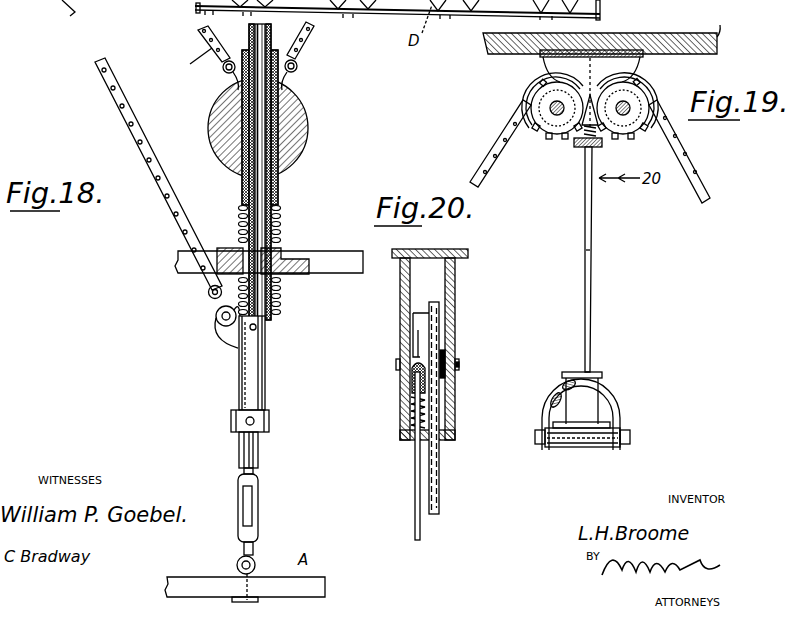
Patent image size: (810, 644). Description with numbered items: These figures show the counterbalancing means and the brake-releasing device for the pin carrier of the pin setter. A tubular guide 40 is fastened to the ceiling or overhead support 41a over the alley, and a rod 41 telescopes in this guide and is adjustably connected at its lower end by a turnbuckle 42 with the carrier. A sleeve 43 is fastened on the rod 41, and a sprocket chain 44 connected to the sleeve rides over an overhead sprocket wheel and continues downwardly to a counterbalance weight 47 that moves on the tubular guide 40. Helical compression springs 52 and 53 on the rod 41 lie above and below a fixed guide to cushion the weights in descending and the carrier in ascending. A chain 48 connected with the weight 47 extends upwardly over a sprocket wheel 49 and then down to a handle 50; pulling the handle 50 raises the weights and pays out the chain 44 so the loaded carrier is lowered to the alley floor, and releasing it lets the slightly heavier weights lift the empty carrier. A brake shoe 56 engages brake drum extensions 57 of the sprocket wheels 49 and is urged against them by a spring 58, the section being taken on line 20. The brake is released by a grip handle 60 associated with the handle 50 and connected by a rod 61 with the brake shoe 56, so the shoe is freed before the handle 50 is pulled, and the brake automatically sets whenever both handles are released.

In FIG. 19, the section line 20 is at (397, 17).
In FIG. 18, the tubular guide 40 is at (250, 30).
In FIG. 18, the rod 41 is at (274, 210).
In FIG. 19, the overhead support 41a is at (505, 52).
In FIG. 18, the turnbuckle 42 is at (262, 520).
In FIG. 18, the sleeve 43 is at (262, 374).
In FIG. 18, the sprocket chain 44 is at (124, 98).
In FIG. 18, the counterbalance weight 47 is at (215, 130).
In FIG. 20, the chain 48 is at (440, 420).
In FIG. 19, the chain 48 is at (480, 178).
In FIG. 19, the sprocket wheel 49 is at (542, 130).
In FIG. 18, the handle 50 is at (210, 280).
In FIG. 19, the handle 50 is at (620, 425).
In FIG. 18, the helical compression spring 52 is at (280, 230).
In FIG. 18, the helical compression spring 53 is at (272, 298).
In FIG. 20, the brake shoe 56 is at (412, 385).
In FIG. 19, the brake shoe 56 is at (598, 94).
In FIG. 20, the brake drum extension 57 is at (418, 332).
In FIG. 19, the brake drum extension 57 is at (566, 130).
In FIG. 19, the spring 58 is at (604, 144).
In FIG. 19, the grip handle 60 is at (600, 410).
In FIG. 20, the rod 61 is at (415, 490).
In FIG. 19, the rod 61 is at (591, 278).